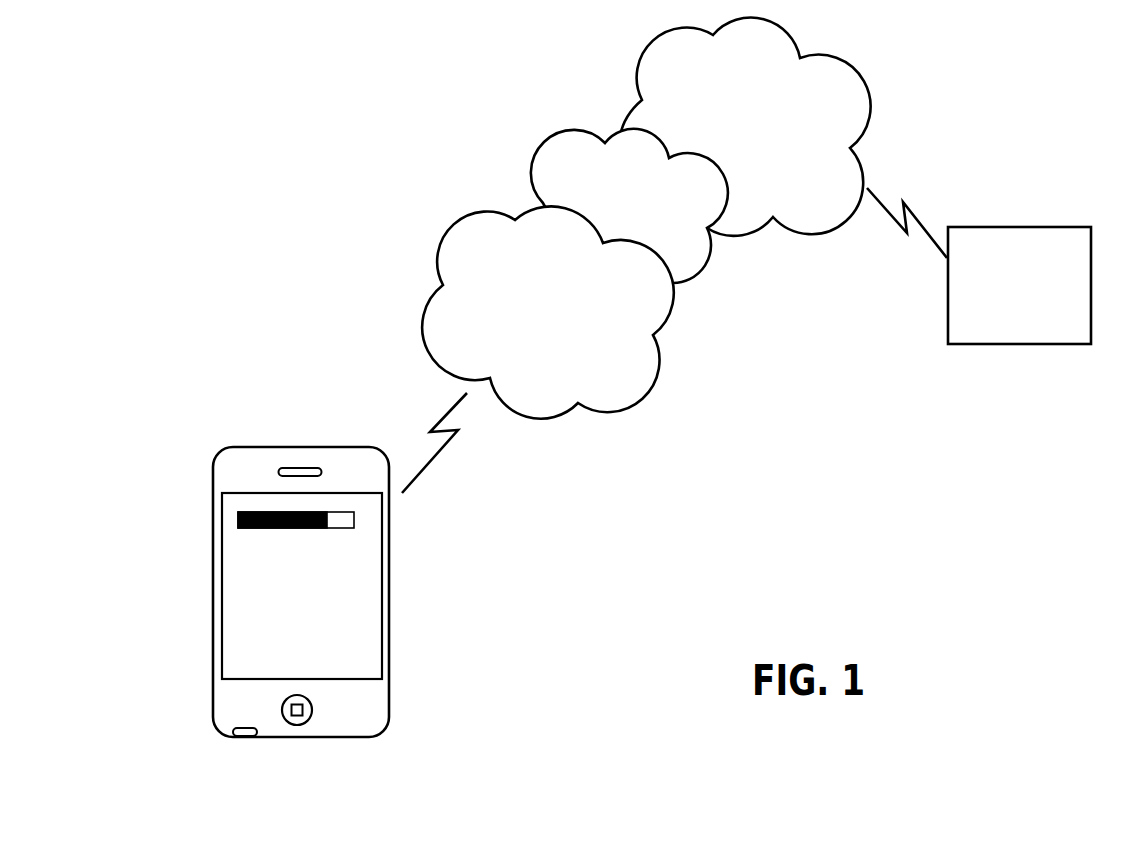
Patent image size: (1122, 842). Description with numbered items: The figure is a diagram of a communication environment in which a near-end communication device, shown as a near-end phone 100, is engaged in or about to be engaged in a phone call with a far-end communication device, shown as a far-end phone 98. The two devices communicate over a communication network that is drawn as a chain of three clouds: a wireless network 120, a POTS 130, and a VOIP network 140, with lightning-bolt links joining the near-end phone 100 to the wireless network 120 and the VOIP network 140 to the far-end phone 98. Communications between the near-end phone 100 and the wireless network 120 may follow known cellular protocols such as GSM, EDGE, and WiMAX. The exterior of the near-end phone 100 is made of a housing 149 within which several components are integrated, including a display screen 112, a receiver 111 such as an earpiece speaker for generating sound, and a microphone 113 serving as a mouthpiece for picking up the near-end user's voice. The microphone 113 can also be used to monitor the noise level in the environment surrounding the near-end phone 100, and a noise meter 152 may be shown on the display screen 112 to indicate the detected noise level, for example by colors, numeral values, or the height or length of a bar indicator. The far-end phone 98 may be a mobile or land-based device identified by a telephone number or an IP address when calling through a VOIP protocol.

The far-end phone 98 is at (1009, 318).
The near-end phone 100 is at (370, 587).
The receiver 111 is at (292, 465).
The display screen 112 is at (446, 585).
The microphone 113 is at (164, 702).
The wireless network 120 is at (531, 353).
The POTS 130 is at (617, 226).
The VOIP network 140 is at (732, 160).
The housing 149 is at (230, 530).
The noise meter 152 is at (340, 528).